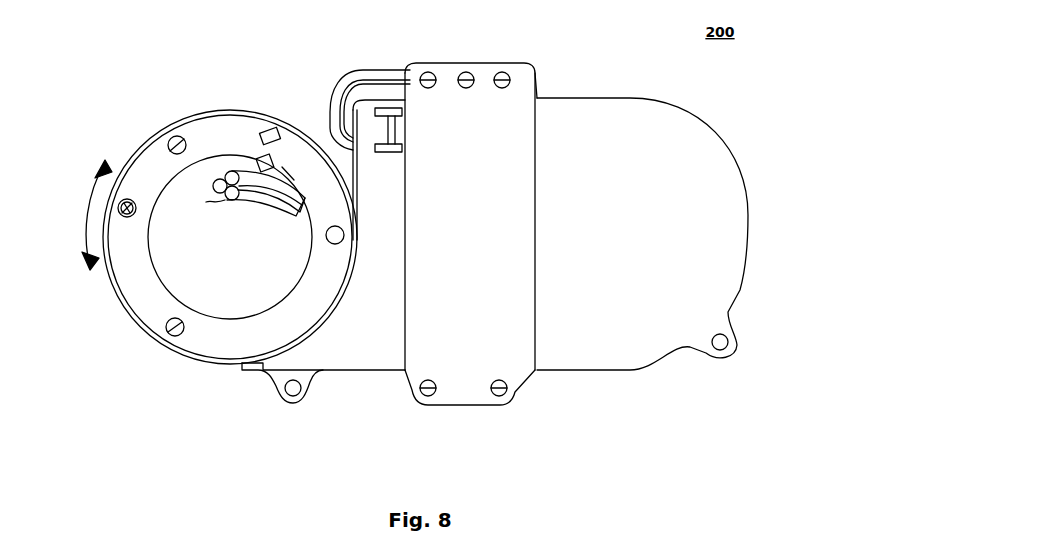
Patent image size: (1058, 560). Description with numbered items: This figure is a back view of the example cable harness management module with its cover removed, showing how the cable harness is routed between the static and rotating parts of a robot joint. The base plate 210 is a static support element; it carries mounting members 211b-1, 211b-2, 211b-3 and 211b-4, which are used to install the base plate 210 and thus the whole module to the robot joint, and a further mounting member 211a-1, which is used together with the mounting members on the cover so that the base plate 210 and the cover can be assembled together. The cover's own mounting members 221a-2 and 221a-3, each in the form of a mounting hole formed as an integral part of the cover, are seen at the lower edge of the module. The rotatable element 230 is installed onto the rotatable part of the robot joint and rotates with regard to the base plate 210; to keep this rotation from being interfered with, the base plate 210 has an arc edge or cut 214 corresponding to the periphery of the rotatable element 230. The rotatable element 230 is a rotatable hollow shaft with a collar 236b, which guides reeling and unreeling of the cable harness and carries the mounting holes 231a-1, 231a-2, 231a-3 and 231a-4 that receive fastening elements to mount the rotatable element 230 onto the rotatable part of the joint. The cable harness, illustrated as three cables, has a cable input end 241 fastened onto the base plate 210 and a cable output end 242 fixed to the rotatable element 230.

The base plate 210 is at (736, 236).
The arc edge or cut 214 is at (310, 350).
The mounting member 211a-1 is at (524, 84).
The mounting member 211b-1 is at (466, 80).
The mounting member 211b-2 is at (428, 80).
The mounting member 211b-3 is at (428, 388).
The mounting member 211b-4 is at (499, 388).
The mounting member 221a-2 is at (293, 388).
The mounting member 221a-3 is at (720, 342).
The rotatable element 230 is at (123, 317).
The mounting hole 231a-1 is at (177, 145).
The mounting hole 231a-2 is at (127, 208).
The mounting hole 231a-3 is at (175, 327).
The mounting hole 231a-4 is at (335, 235).
The collar 236b is at (204, 124).
The cable input end 241 is at (358, 80).
The cable output end 242 is at (236, 202).